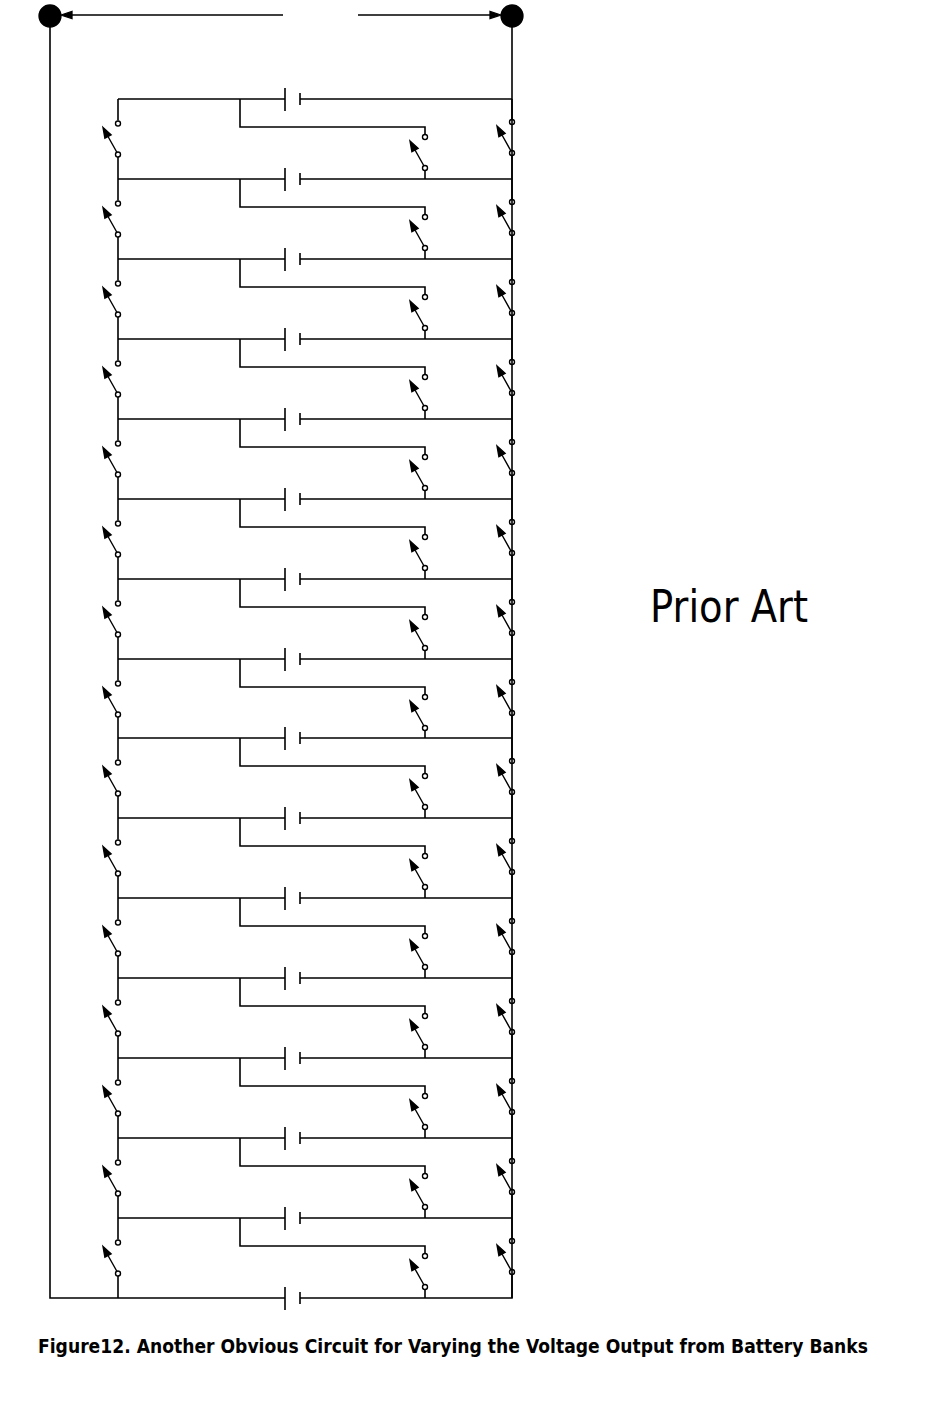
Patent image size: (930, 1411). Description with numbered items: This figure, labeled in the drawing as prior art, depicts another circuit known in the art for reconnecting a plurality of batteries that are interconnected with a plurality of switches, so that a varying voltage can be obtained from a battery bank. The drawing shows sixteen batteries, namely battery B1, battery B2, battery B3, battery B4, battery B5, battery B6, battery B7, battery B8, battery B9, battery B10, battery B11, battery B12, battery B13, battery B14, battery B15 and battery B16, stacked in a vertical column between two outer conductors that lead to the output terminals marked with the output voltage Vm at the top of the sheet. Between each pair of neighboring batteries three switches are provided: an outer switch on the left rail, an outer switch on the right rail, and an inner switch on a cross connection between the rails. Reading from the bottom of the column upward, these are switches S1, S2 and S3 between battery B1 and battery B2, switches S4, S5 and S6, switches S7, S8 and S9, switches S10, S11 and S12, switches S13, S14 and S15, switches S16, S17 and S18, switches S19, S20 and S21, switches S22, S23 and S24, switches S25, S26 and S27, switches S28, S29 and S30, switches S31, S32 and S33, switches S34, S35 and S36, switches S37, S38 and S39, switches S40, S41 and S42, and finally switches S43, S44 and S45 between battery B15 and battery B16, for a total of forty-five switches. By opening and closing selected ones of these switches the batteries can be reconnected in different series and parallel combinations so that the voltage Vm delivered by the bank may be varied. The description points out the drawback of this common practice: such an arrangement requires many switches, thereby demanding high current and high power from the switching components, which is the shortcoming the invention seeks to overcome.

The output voltage terminals Vm is at (316, 13).
The battery cell 1 B1 is at (297, 1284).
The battery cell 2 B2 is at (297, 1204).
The battery cell 3 B3 is at (297, 1124).
The battery cell 4 B4 is at (297, 1044).
The battery cell 5 B5 is at (297, 964).
The battery cell 6 B6 is at (297, 884).
The battery cell 7 B7 is at (297, 804).
The battery cell 8 B8 is at (297, 724).
The battery cell 9 B9 is at (297, 645).
The battery cell 10 B10 is at (304, 565).
The battery cell 11 B11 is at (304, 485).
The battery cell 12 B12 is at (304, 405).
The battery cell 13 B13 is at (304, 325).
The battery cell 14 B14 is at (304, 245).
The battery cell 15 B15 is at (304, 165).
The battery cell 16 B16 is at (304, 85).
The switch 1 S1 is at (435, 1272).
The switch 2 S2 is at (527, 1261).
The switch 3 S3 is at (136, 1260).
The switch 4 S4 is at (435, 1192).
The switch 5 S5 is at (527, 1181).
The switch 6 S6 is at (136, 1180).
The switch 7 S7 is at (435, 1112).
The switch 8 S8 is at (527, 1101).
The switch 9 S9 is at (136, 1100).
The switch 10 S10 is at (442, 1032).
The switch 11 S11 is at (534, 1021).
The switch 12 S12 is at (143, 1020).
The switch 13 S13 is at (442, 952).
The switch 14 S14 is at (534, 941).
The switch 15 S15 is at (143, 940).
The switch 16 S16 is at (442, 872).
The switch 17 S17 is at (534, 861).
The switch 18 S18 is at (143, 860).
The switch 19 S19 is at (442, 792).
The switch 20 S20 is at (534, 781).
The switch 21 S21 is at (143, 780).
The switch 22 S22 is at (442, 713).
The switch 23 S23 is at (534, 702).
The switch 24 S24 is at (143, 701).
The switch 25 S25 is at (442, 633).
The switch 26 S26 is at (534, 622).
The switch 27 S27 is at (143, 621).
The switch 28 S28 is at (442, 553).
The switch 29 S29 is at (534, 542).
The switch 30 S30 is at (143, 541).
The switch 31 S31 is at (442, 473).
The switch 32 S32 is at (534, 462).
The switch 33 S33 is at (143, 461).
The switch 34 S34 is at (442, 393).
The switch 35 S35 is at (534, 382).
The switch 36 S36 is at (143, 381).
The switch 37 S37 is at (442, 313).
The switch 38 S38 is at (534, 302).
The switch 39 S39 is at (143, 301).
The switch 40 S40 is at (442, 233).
The switch 41 S41 is at (534, 222).
The switch 42 S42 is at (143, 221).
The switch 43 S43 is at (442, 153).
The switch 44 S44 is at (534, 142).
The switch 45 S45 is at (143, 141).